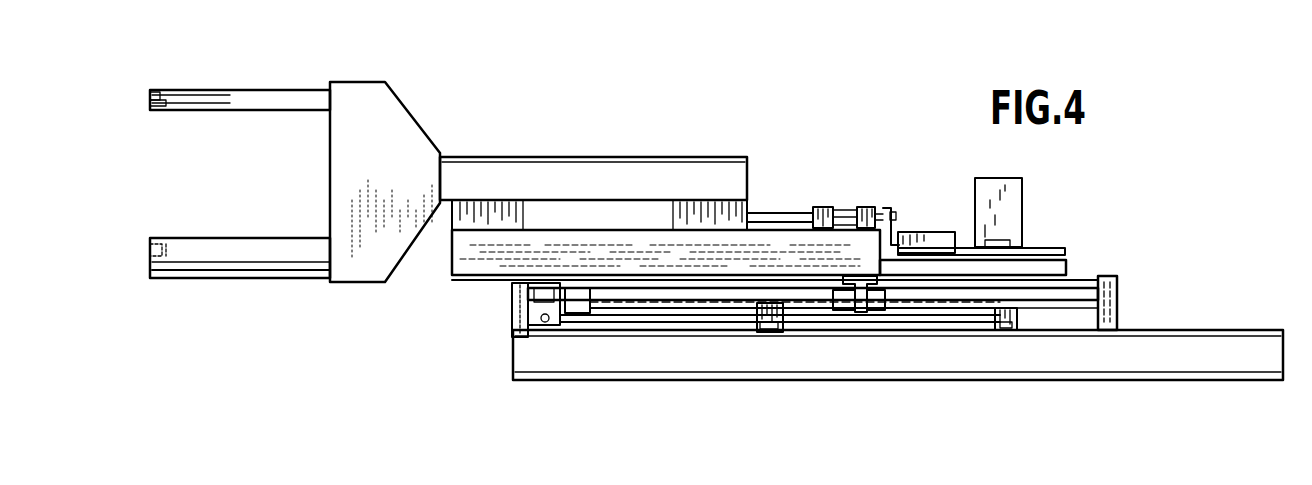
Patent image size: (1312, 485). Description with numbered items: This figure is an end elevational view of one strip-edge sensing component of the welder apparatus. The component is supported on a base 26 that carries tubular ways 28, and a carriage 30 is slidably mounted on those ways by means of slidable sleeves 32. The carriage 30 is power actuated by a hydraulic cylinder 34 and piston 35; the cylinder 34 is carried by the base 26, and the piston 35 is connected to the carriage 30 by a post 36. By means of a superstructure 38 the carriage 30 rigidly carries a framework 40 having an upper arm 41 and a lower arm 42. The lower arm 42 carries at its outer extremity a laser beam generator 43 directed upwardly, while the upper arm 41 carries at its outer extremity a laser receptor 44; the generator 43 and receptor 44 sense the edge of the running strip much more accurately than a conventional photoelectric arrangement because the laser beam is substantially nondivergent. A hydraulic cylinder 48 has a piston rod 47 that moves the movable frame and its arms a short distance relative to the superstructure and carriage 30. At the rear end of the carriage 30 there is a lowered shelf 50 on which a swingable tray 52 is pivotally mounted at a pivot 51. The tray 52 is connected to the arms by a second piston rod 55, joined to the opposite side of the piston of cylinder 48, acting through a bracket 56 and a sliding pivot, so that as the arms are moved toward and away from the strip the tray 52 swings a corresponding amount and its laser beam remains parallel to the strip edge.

The base 26 is at (1118, 380).
The tubular ways 28 is at (1071, 308).
The carriage 30 is at (470, 278).
The slidable sleeves 32 is at (872, 284).
The hydraulic cylinder 34 is at (925, 330).
The piston 35 is at (651, 324).
The post 36 is at (527, 293).
The superstructure 38 is at (576, 150).
The framework 40 is at (388, 86).
The upper arm 41 is at (258, 92).
The lower arm 42 is at (238, 242).
The laser beam generator 43 is at (146, 246).
The laser receptor 44 is at (148, 92).
The piston rod 47 is at (795, 212).
The hydraulic cylinder 48 is at (844, 208).
The lowered shelf 50 is at (1068, 266).
The pivot 51 is at (1004, 244).
The swingable tray 52 is at (1056, 250).
The second piston rod 55 is at (884, 210).
The bracket 56 is at (906, 234).